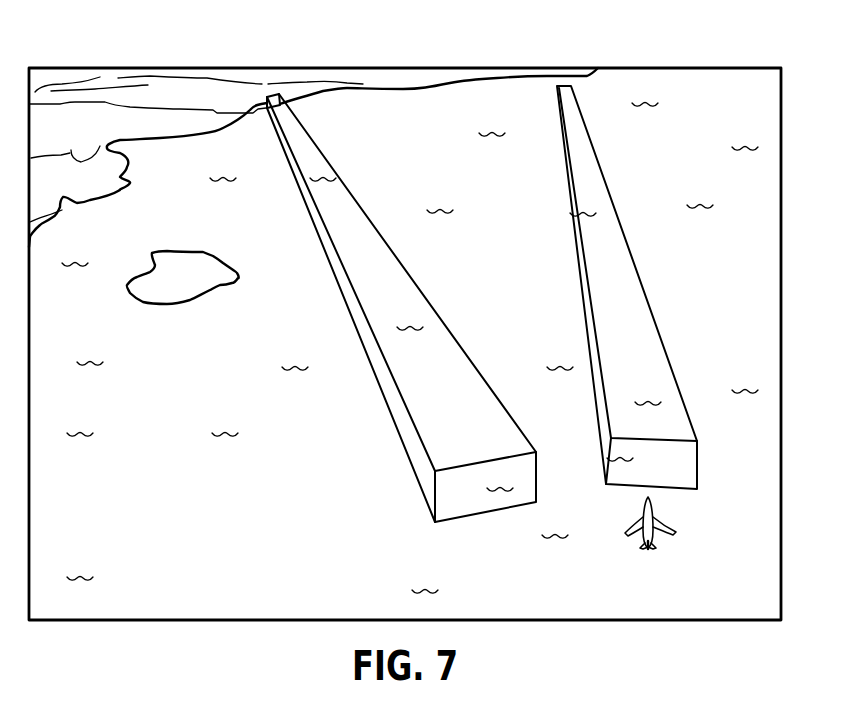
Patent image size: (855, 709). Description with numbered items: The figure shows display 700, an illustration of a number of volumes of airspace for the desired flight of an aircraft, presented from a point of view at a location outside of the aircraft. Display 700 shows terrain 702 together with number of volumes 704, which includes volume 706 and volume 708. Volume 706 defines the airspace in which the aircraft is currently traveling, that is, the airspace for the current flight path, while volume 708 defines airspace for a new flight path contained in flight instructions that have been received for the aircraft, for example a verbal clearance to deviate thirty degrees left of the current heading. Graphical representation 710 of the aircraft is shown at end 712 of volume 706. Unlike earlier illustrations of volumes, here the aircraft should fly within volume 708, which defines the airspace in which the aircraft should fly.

The display 700 is at (606, 62).
The terrain 702 is at (193, 507).
The number of volumes 704 is at (401, 321).
The volume 706 is at (664, 287).
The volume 708 is at (415, 457).
The graphical representation 710 is at (655, 533).
The end 712 is at (678, 467).